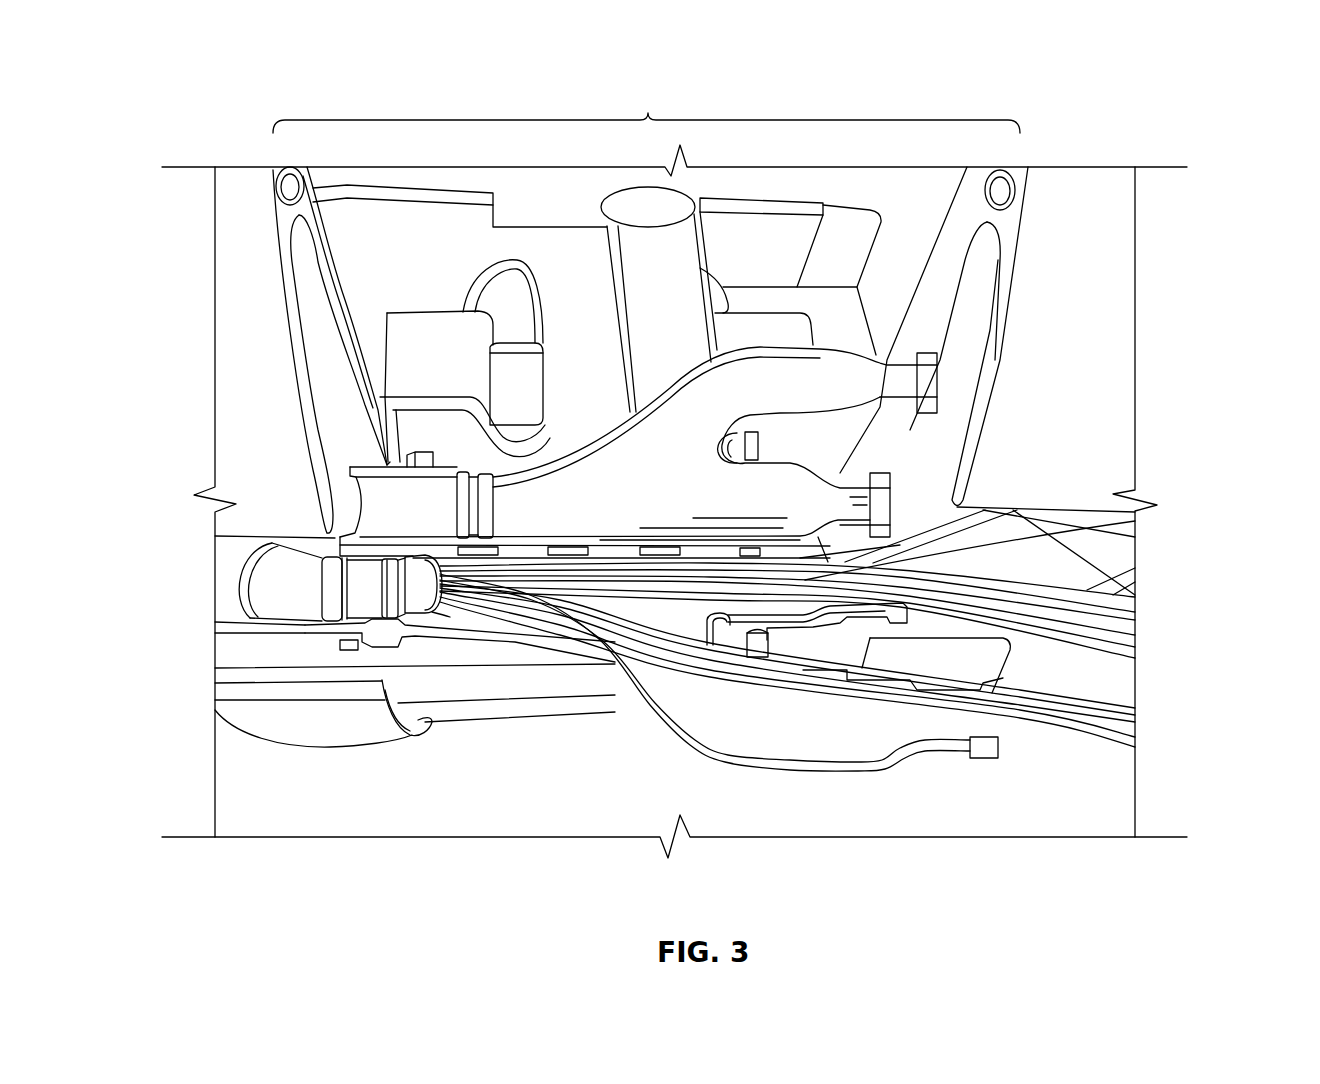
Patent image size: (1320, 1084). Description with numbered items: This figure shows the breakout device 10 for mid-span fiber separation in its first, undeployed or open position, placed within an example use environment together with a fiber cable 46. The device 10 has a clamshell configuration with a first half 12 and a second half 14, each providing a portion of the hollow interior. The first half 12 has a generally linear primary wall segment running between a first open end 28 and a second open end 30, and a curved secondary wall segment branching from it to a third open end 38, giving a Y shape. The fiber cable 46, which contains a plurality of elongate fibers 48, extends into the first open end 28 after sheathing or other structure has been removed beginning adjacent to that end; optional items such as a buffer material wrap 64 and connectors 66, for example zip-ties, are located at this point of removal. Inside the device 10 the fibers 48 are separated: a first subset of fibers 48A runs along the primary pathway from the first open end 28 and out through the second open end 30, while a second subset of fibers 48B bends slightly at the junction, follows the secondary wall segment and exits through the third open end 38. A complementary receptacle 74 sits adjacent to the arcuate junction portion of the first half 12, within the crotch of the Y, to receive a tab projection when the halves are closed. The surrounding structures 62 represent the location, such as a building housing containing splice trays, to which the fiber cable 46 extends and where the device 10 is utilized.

The breakout device 10 is at (646, 728).
The first half 12 is at (618, 462).
The second half 14 is at (725, 728).
The first open end 28 is at (342, 492).
The second open end 30 is at (910, 503).
The third open end 38 is at (952, 380).
The fiber cable 46 is at (227, 595).
The fibers 48 is at (856, 655).
The first subset of fibers 48A is at (1130, 610).
The second subset of fibers 48B is at (1130, 722).
The structures 62 is at (648, 112).
The buffer material wrap 64 is at (270, 605).
The connectors 66 is at (328, 623).
The complementary receptacle 74 is at (717, 463).